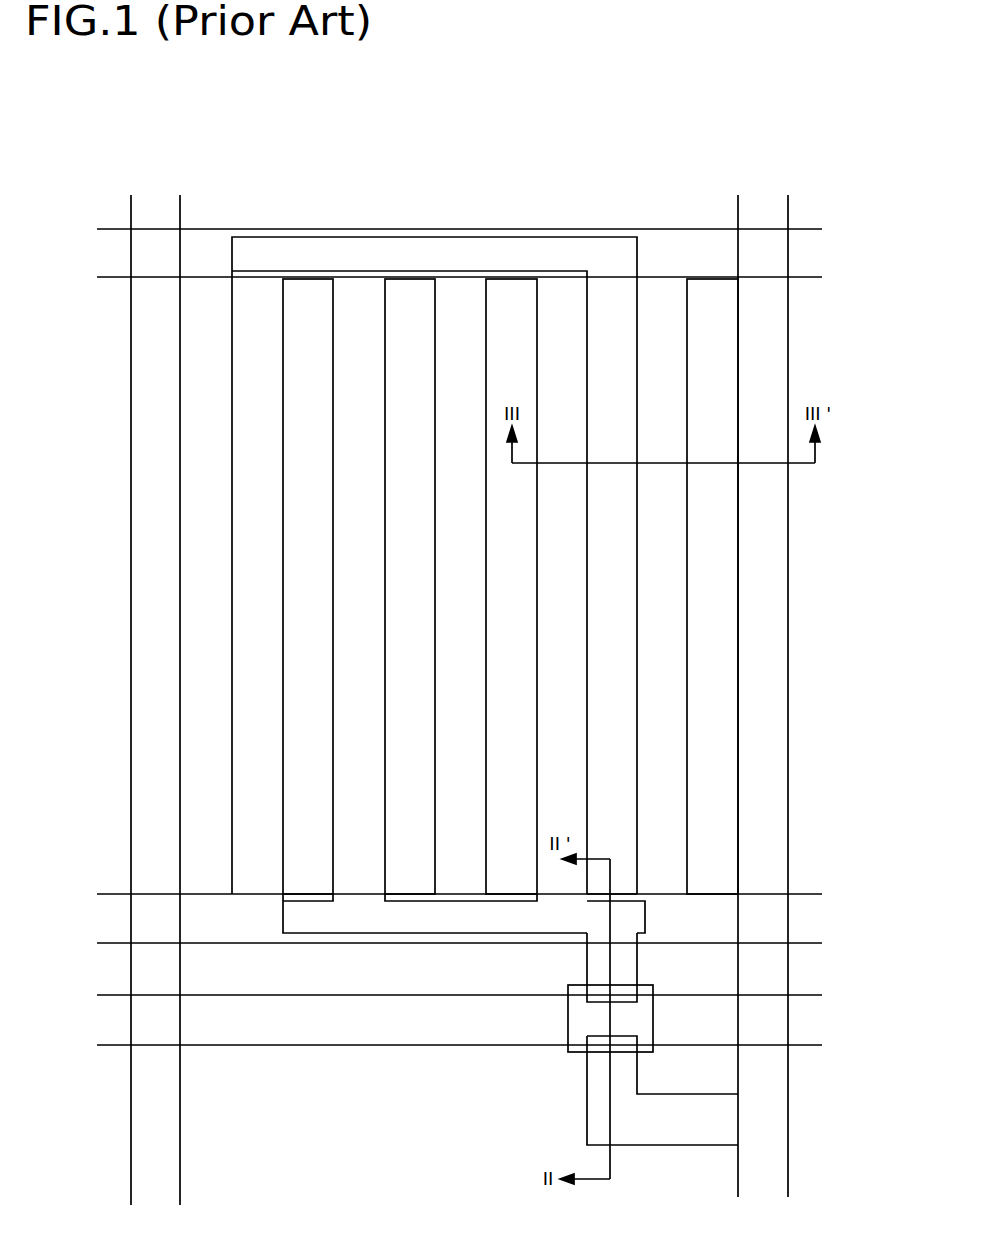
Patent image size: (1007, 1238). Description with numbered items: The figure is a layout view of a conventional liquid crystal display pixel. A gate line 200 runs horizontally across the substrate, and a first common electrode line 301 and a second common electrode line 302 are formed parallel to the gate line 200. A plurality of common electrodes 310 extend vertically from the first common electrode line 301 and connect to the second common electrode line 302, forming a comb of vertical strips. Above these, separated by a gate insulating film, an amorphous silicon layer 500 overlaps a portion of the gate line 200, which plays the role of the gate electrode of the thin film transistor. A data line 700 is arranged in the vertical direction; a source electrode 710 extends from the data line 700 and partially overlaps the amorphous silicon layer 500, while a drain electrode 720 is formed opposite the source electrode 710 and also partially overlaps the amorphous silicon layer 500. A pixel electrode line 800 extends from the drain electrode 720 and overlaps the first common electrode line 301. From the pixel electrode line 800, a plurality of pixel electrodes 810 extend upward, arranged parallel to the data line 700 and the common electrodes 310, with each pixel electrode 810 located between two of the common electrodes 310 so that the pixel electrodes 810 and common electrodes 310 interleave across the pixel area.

The gate line 200 is at (808, 1022).
The first common electrode line 301 is at (808, 919).
The second common electrode line 302 is at (802, 258).
The common electrode 310 is at (652, 569).
The amorphous silicon layer 500 is at (568, 1050).
The data line 700 is at (770, 1160).
The source electrode 710 is at (590, 1121).
The drain electrode 720 is at (593, 1003).
The pixel electrode line 800 is at (333, 917).
The pixel electrode 810 is at (562, 293).